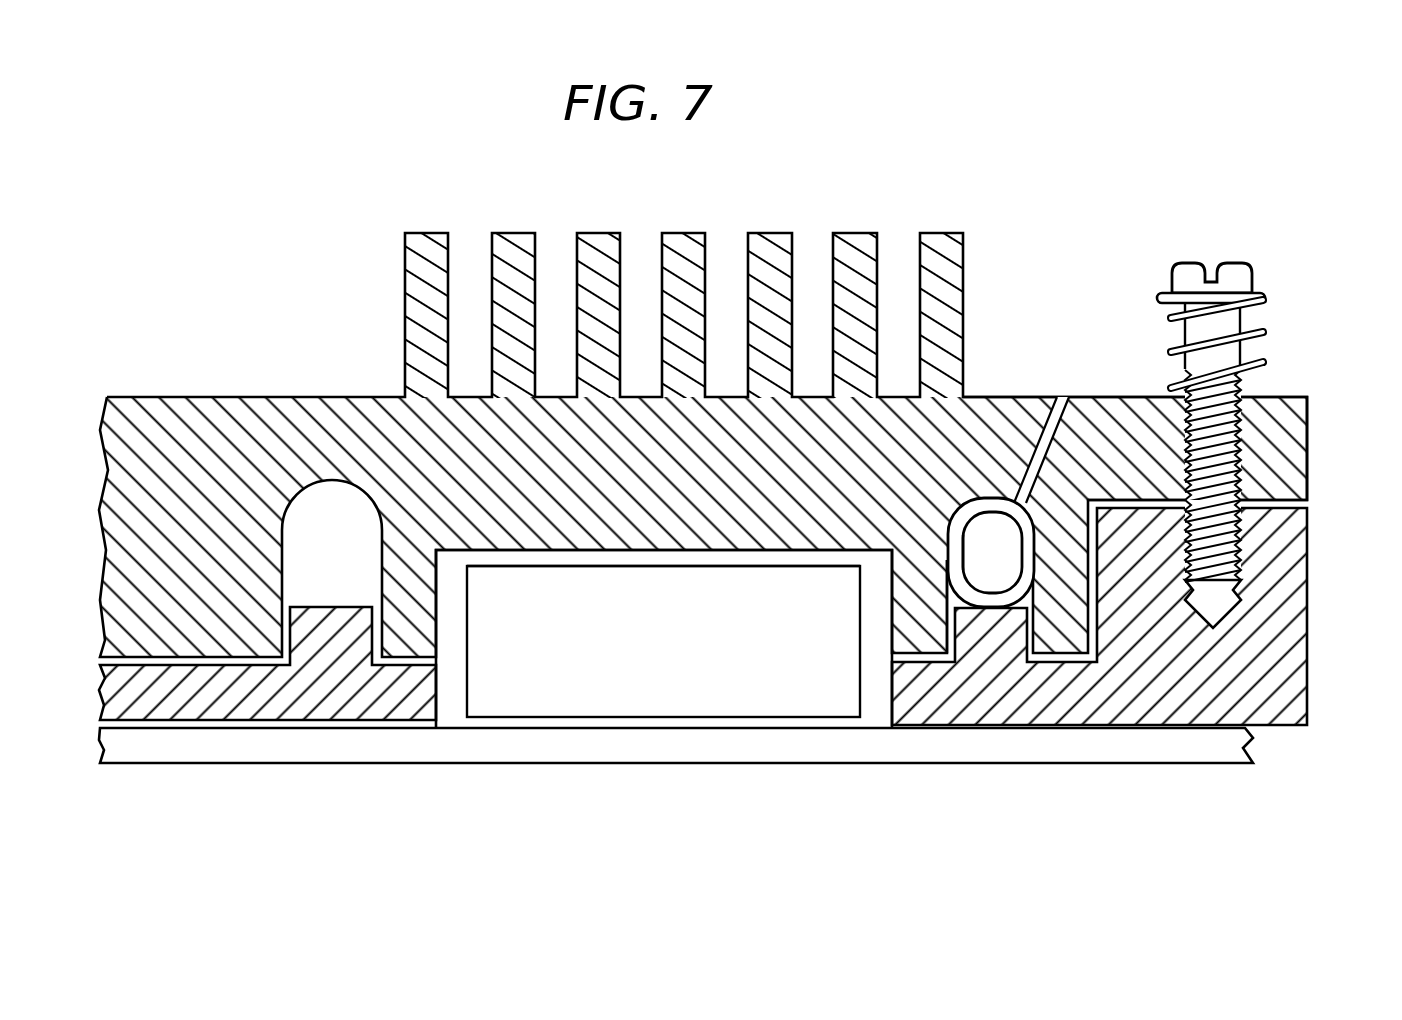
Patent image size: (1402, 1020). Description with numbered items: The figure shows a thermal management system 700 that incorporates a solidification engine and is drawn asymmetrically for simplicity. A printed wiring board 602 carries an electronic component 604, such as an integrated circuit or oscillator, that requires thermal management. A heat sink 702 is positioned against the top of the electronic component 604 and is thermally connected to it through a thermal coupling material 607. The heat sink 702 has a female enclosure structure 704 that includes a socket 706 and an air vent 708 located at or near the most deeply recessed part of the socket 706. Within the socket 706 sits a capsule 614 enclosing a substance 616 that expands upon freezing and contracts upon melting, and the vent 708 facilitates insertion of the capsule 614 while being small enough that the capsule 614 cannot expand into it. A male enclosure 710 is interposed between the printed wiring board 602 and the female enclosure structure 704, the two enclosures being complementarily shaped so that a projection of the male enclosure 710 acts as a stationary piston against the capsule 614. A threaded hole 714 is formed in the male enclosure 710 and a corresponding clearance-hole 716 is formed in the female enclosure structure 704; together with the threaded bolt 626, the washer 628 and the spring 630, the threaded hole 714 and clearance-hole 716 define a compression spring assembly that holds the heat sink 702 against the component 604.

The system 700 is at (896, 122).
The heat sink 702 is at (700, 420).
The female enclosure structure 704 is at (990, 422).
The socket 706 is at (947, 537).
The air vent 708 is at (1055, 432).
The male enclosure 710 is at (1296, 676).
The threaded hole 714 is at (1228, 565).
The clearance-hole 716 is at (1232, 424).
The threaded bolt 626 is at (1238, 278).
The washer 628 is at (1264, 300).
The spring 630 is at (1173, 350).
The printed wiring board 602 is at (184, 750).
The electronic component 604 is at (562, 703).
The thermal coupling material 607 is at (526, 558).
The capsule 614 is at (955, 578).
The substance 616 is at (977, 545).